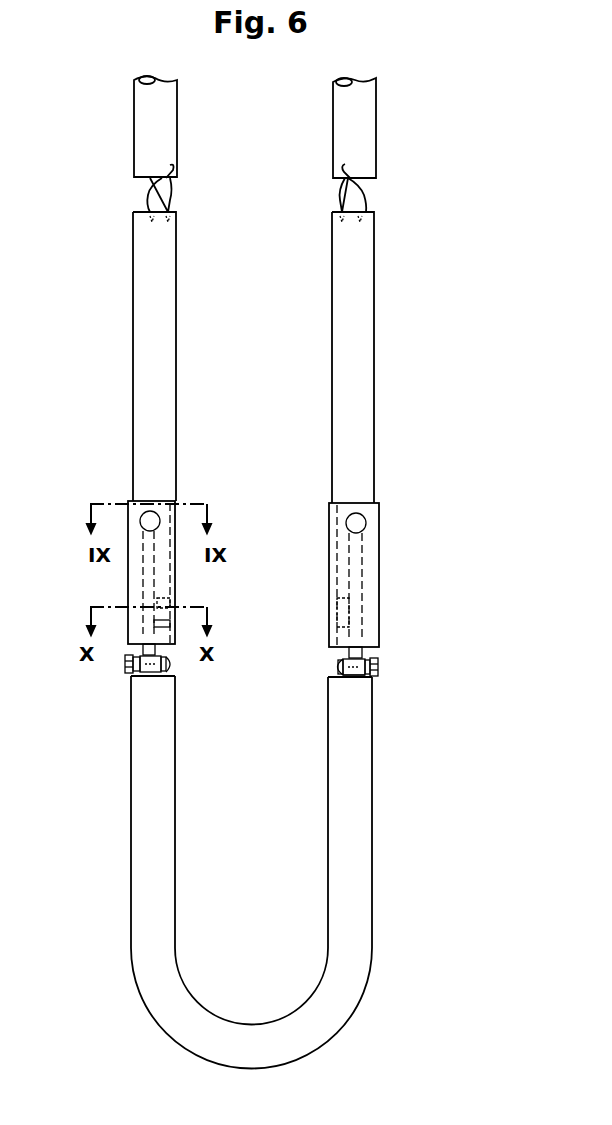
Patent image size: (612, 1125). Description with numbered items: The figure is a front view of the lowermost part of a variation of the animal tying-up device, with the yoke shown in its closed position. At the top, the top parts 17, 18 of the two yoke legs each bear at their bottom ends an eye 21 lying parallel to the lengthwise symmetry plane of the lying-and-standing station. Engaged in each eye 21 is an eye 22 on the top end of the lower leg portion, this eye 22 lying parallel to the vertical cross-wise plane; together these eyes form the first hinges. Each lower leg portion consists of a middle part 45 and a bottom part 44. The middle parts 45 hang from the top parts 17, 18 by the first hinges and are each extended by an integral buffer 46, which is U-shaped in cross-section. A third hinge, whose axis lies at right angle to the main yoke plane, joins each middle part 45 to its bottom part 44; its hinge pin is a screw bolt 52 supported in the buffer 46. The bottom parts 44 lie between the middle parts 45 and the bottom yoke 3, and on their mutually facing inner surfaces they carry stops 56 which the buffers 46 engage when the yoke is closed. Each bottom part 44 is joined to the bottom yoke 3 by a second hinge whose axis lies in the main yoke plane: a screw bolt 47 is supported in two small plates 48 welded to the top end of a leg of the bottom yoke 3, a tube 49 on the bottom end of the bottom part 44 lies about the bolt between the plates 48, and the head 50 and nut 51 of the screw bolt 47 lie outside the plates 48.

The bottom yoke 3 is at (293, 1045).
The top part of yoke leg 17 is at (360, 131).
The top part of yoke leg 18 is at (138, 131).
The eye 21 is at (166, 165).
The eye 22 is at (148, 198).
The bottom part 44 is at (148, 583).
The middle part 45 is at (135, 338).
The buffer 46 is at (370, 556).
The screw bolt 47 is at (382, 665).
The small plates 48 is at (372, 677).
The tube 49 is at (148, 668).
The head 50 is at (330, 665).
The nut 51 is at (125, 663).
The screw bolt 52 is at (370, 517).
The stop 56 is at (162, 603).